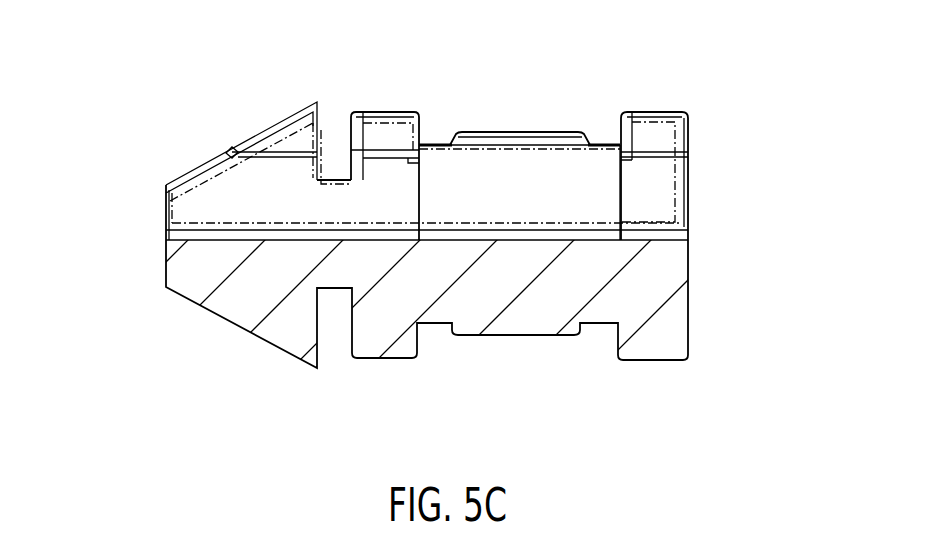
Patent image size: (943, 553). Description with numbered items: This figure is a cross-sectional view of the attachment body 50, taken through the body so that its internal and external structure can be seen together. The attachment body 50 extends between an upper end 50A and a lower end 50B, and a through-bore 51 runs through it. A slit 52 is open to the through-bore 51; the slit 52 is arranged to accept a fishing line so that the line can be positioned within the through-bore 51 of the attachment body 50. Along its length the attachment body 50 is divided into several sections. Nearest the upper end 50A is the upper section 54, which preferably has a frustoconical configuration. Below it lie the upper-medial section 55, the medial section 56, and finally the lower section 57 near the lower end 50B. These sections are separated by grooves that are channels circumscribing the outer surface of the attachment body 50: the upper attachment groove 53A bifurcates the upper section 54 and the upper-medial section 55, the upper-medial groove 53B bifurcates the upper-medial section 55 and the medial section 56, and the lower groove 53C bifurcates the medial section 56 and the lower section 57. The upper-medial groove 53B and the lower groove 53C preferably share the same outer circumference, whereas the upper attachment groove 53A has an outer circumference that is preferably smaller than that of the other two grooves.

The attachment body 50 is at (184, 403).
The upper end 50A is at (124, 235).
The lower end 50B is at (759, 236).
The through-bore 51 is at (690, 237).
The slit 52 is at (675, 181).
The upper attachment groove 53A is at (332, 178).
The upper-medial groove 53B is at (437, 143).
The lower groove 53C is at (595, 143).
The upper section 54 is at (196, 160).
The upper-medial section 55 is at (388, 110).
The medial section 56 is at (510, 132).
The lower section 57 is at (656, 110).